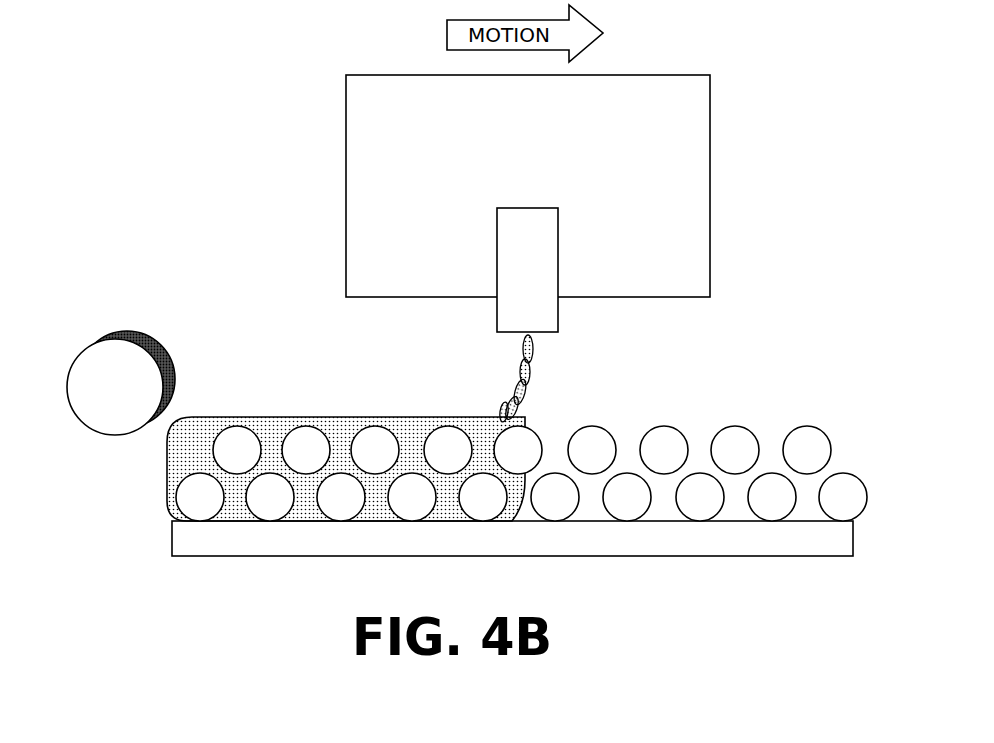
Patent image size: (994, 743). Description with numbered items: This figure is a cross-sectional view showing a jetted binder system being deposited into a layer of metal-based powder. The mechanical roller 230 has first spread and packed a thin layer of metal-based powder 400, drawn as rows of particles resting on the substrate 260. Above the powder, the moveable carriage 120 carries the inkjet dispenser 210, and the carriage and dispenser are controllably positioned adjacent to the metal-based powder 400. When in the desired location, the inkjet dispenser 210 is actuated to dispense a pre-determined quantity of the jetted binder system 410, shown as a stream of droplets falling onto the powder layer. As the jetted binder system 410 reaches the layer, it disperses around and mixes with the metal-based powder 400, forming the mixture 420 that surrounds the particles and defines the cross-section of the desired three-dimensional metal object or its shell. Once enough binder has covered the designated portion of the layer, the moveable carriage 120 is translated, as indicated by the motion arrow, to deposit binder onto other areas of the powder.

The moveable carriage 120 is at (508, 111).
The inkjet dispenser 210 is at (542, 269).
The mechanical roller 230 is at (117, 390).
The substrate 260 is at (802, 556).
The metal-based powder 400 is at (268, 497).
The jetted binder system 410 is at (520, 392).
The mixture 420 is at (268, 400).